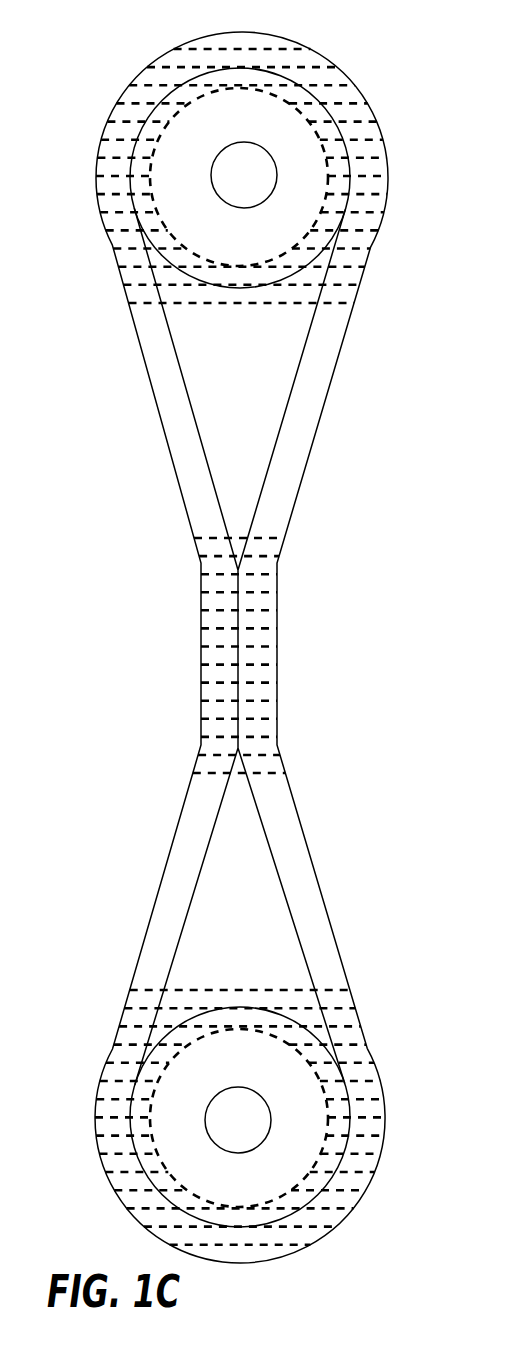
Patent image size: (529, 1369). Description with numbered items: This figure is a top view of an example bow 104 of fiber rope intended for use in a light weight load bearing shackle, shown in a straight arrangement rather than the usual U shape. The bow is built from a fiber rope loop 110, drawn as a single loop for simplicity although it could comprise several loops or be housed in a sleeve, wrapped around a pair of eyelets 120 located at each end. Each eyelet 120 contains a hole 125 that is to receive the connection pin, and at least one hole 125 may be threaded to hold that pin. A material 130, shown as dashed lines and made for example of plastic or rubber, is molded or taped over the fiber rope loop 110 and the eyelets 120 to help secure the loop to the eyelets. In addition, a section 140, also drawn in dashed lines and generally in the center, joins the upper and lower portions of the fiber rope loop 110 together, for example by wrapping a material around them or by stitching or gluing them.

The bow 104 is at (394, 77).
The fiber rope loop 110 is at (300, 443).
The eyelets 120 is at (283, 208).
The hole 125 is at (237, 177).
The material 130 is at (328, 303).
The section 140 is at (277, 663).